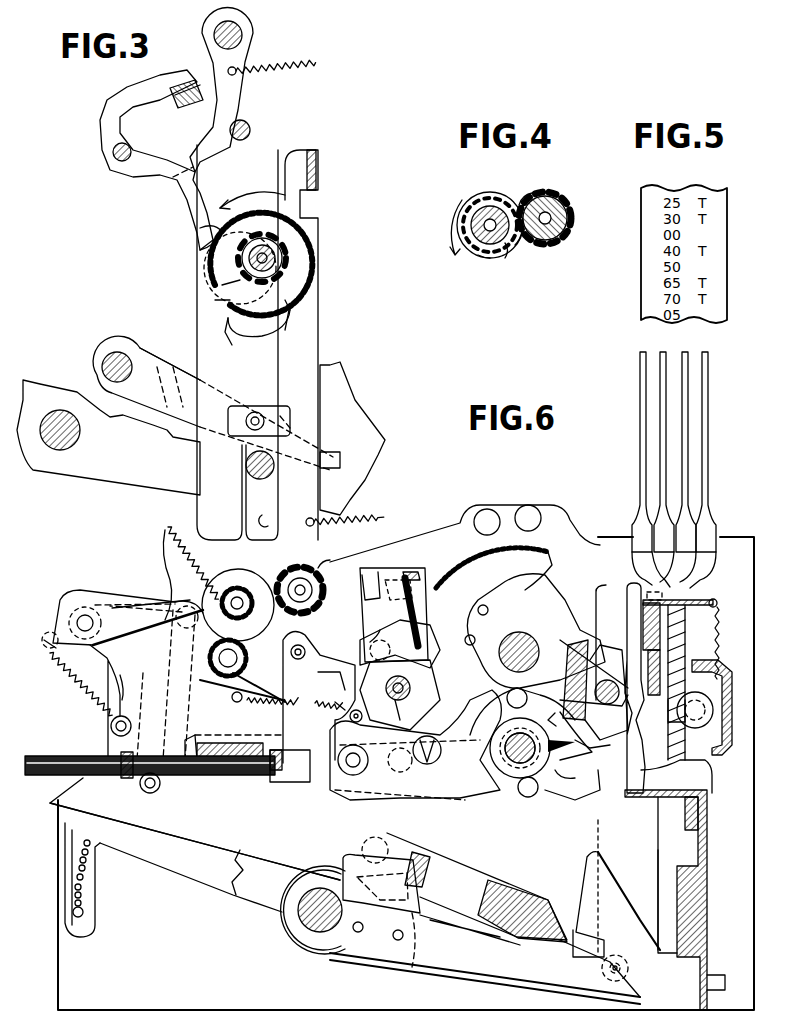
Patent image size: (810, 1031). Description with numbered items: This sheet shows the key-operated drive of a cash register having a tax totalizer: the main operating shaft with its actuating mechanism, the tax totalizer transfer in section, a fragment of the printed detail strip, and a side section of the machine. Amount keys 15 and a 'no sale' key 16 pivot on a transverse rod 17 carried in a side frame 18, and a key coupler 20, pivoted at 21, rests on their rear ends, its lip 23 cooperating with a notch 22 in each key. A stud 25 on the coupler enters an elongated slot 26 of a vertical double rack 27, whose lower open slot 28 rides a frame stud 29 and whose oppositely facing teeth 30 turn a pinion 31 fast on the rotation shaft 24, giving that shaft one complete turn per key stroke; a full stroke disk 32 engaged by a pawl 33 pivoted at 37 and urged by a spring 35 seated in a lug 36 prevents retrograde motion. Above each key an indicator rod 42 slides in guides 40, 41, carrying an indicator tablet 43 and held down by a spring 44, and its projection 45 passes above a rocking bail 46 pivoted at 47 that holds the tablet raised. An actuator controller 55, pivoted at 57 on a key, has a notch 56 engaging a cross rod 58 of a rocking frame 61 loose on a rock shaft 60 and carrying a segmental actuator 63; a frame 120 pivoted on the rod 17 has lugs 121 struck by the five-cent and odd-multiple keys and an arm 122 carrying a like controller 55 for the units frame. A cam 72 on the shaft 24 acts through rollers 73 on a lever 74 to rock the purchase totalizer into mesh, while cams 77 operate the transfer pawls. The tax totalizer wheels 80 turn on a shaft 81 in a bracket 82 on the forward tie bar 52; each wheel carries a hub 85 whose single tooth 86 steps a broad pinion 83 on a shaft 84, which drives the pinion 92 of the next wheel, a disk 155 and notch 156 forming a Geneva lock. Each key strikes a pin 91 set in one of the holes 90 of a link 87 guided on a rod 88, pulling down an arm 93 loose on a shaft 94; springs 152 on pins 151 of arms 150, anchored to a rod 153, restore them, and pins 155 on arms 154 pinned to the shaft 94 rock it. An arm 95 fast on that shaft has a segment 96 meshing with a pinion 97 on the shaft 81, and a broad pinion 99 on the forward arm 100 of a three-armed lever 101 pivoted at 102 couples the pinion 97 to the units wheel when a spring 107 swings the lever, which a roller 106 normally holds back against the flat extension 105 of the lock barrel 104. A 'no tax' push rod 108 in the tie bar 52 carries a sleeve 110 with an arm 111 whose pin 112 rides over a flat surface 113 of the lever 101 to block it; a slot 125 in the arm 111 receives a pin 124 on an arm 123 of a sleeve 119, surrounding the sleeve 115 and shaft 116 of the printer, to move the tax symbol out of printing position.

In FIG. 6, the amount keys 15 is at (248, 890).
In FIG. 3, the no sale key 16 is at (80, 470).
In FIG. 6, the no sale key 16 is at (200, 877).
In FIG. 3, the transverse rod 17 is at (60, 432).
In FIG. 6, the transverse rod 17 is at (307, 917).
In FIG. 6, the side frame 18 is at (575, 545).
In FIG. 3, the key coupler 20 is at (170, 349).
In FIG. 6, the key coupler 20 is at (515, 880).
In FIG. 3, the pivot 21 is at (135, 366).
In FIG. 6, the pivot 21 is at (370, 845).
In FIG. 3, the notch 22 is at (320, 482).
In FIG. 6, the notch 22 is at (590, 940).
In FIG. 3, the lip 23 is at (312, 462).
In FIG. 6, the lip 23 is at (553, 905).
In FIG. 3, the rotation shaft 24 is at (249, 259).
In FIG. 6, the rotation shaft 24 is at (535, 760).
In FIG. 3, the stud 25 is at (276, 406).
In FIG. 3, the elongated slot 26 is at (259, 420).
In FIG. 3, the double rack 27 is at (296, 352).
In FIG. 3, the open slot 28 is at (300, 521).
In FIG. 3, the stud 29 is at (266, 476).
In FIG. 3, the teeth 30 is at (284, 324).
In FIG. 3, the pinion 31 is at (240, 269).
In FIG. 3, the full stroke disk 32 is at (222, 287).
In FIG. 3, the full stroke pawl 33 is at (106, 140).
In FIG. 3, the spring 35 is at (176, 102).
In FIG. 3, the lug 36 is at (186, 110).
In FIG. 3, the pivot 37 is at (113, 156).
In FIG. 6, the guide 40 is at (706, 826).
In FIG. 6, the guide 41 is at (700, 598).
In FIG. 6, the indicator rod 42 is at (668, 893).
In FIG. 6, the indicator tablet 43 is at (708, 440).
In FIG. 6, the spring 44 is at (680, 650).
In FIG. 6, the projection 45 is at (700, 775).
In FIG. 6, the rocking bail 46 is at (725, 700).
In FIG. 6, the pivot 47 is at (700, 700).
In FIG. 6, the forward tie bar 52 is at (240, 792).
In FIG. 6, the actuator controller 55 is at (605, 810).
In FIG. 6, the notch 56 is at (562, 722).
In FIG. 6, the pivot 57 is at (620, 960).
In FIG. 6, the cross rod 58 is at (595, 645).
In FIG. 6, the rock shaft 60 is at (522, 648).
In FIG. 6, the rocking frame 61 is at (575, 640).
In FIG. 6, the actuator 63 is at (520, 563).
In FIG. 6, the cam 72 is at (512, 722).
In FIG. 6, the anti-friction rollers 73 is at (528, 698).
In FIG. 6, the lever 74 is at (445, 796).
In FIG. 6, the cams 77 is at (552, 745).
In FIG. 4, the totalizer wheels 80 is at (462, 257).
In FIG. 6, the totalizer wheels 80 is at (262, 575).
In FIG. 4, the shaft 81 is at (494, 210).
In FIG. 6, the shaft 81 is at (230, 600).
In FIG. 6, the bracket 82 is at (106, 658).
In FIG. 4, the pinions 83 is at (524, 200).
In FIG. 6, the pinions 83 is at (323, 575).
In FIG. 4, the shaft 84 is at (556, 196).
In FIG. 6, the shaft 84 is at (320, 595).
In FIG. 4, the hub 85 is at (482, 258).
In FIG. 4, the single tooth 86 is at (516, 250).
In FIG. 6, the link 87 is at (133, 687).
In FIG. 6, the rod 88 is at (160, 790).
In FIG. 6, the holes 90 is at (75, 890).
In FIG. 6, the pin 91 is at (73, 912).
In FIG. 4, the pinion 92 is at (483, 205).
In FIG. 6, the pinion 92 is at (210, 658).
In FIG. 6, the arms 93 is at (160, 595).
In FIG. 6, the shaft 94 is at (77, 622).
In FIG. 6, the arm 95 is at (100, 596).
In FIG. 6, the segment 96 is at (165, 540).
In FIG. 6, the pinion 97 is at (222, 630).
In FIG. 6, the broad pinion 99 is at (220, 665).
In FIG. 6, the forwardly extending arm 100 is at (200, 682).
In FIG. 6, the three-armed lever 101 is at (376, 717).
In FIG. 6, the pivot 102 is at (432, 640).
In FIG. 6, the lock barrel 104 is at (395, 570).
In FIG. 6, the extension 105 is at (412, 580).
In FIG. 6, the roller 106 is at (405, 590).
In FIG. 6, the spring 107 is at (258, 706).
In FIG. 6, the push rod 108 is at (60, 758).
In FIG. 6, the sleeve 110 is at (262, 738).
In FIG. 6, the upwardly extending arm 111 is at (285, 718).
In FIG. 6, the pin 112 is at (332, 701).
In FIG. 6, the flat surface 113 is at (333, 683).
In FIG. 6, the sleeve 115 is at (412, 692).
In FIG. 6, the shaft 116 is at (412, 713).
In FIG. 6, the sleeve 119 is at (405, 698).
In FIG. 6, the frame 120 is at (340, 850).
In FIG. 6, the lugs 121 is at (432, 893).
In FIG. 6, the arm 122 is at (475, 958).
In FIG. 6, the arm 123 is at (410, 678).
In FIG. 6, the pin 124 is at (370, 648).
In FIG. 6, the slot 125 is at (372, 634).
In FIG. 6, the integral arms 150 is at (44, 636).
In FIG. 6, the pins 151 is at (50, 647).
In FIG. 6, the springs 152 is at (58, 660).
In FIG. 6, the rod 153 is at (122, 717).
In FIG. 6, the arms 154 is at (110, 655).
In FIG. 6, the pins 155 is at (140, 612).
In FIG. 4, the notch 156 is at (510, 265).